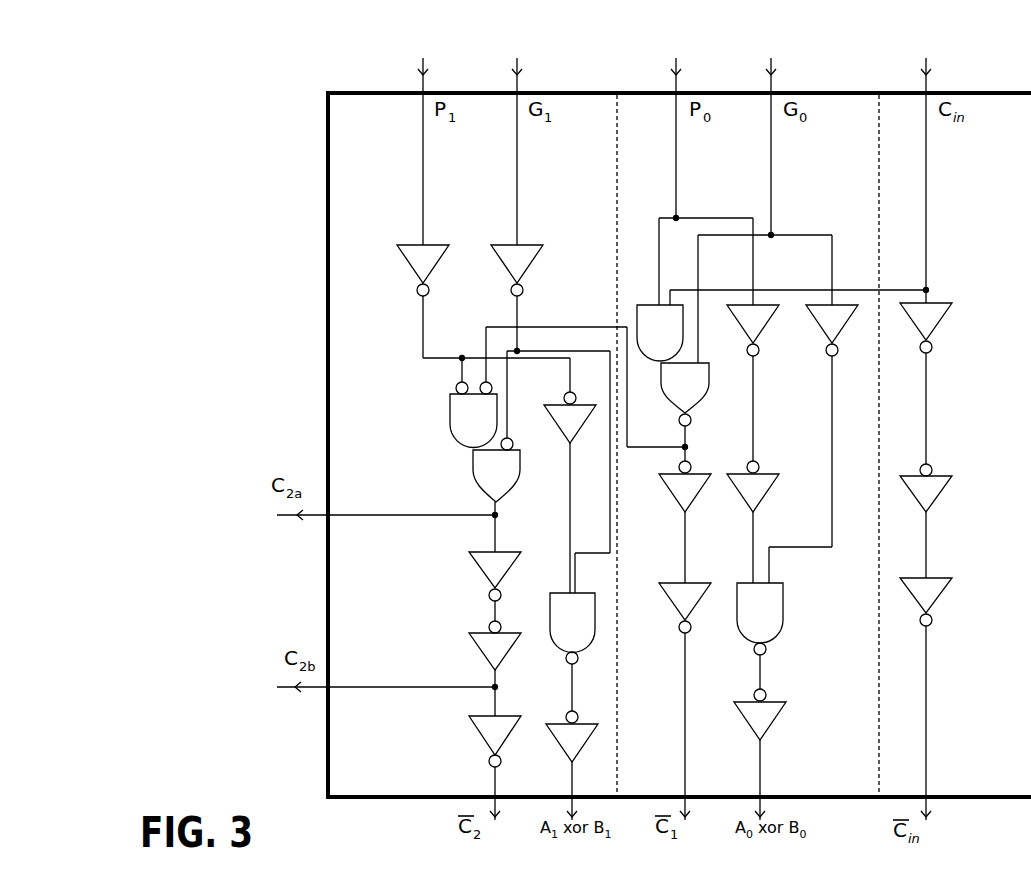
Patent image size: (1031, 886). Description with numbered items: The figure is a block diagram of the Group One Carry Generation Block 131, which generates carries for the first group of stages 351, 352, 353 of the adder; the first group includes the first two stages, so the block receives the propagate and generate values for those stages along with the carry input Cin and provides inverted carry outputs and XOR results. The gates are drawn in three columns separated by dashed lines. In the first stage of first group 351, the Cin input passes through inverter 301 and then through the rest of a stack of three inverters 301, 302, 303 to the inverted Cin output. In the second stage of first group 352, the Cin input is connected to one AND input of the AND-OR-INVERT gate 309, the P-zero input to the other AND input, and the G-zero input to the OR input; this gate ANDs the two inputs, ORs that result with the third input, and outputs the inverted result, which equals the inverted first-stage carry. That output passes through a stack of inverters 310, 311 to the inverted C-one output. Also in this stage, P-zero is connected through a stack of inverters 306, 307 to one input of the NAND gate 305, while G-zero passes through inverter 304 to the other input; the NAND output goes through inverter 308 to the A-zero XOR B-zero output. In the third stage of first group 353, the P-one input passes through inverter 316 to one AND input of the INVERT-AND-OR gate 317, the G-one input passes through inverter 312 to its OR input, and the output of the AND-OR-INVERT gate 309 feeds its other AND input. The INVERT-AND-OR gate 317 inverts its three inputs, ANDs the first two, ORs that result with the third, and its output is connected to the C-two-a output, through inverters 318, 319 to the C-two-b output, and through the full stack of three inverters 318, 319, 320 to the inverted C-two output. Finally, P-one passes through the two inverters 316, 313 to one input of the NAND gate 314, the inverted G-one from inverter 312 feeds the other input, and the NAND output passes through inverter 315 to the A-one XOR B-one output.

The Group 1 Carry Generation Block 131 is at (602, 401).
The first stage of first group 351 is at (953, 158).
The second stage of first group 352 is at (781, 404).
The third stage of first group 353 is at (516, 404).
The inverter 301 is at (926, 328).
The inverter 302 is at (926, 488).
The inverter 303 is at (936, 602).
The inverter 304 is at (832, 330).
The NAND gate 305 is at (760, 619).
The inverter 306 is at (753, 330).
The inverter 307 is at (753, 486).
The inverter 308 is at (769, 716).
The AND-OR-INVERT gate 309 is at (673, 365).
The inverter 310 is at (677, 489).
The inverter 311 is at (676, 608).
The inverter 312 is at (532, 270).
The inverter 313 is at (570, 417).
The NAND gate 314 is at (572, 628).
The inverter 315 is at (572, 736).
The inverter 316 is at (423, 270).
The INVERT-AND-OR gate 317 is at (474, 442).
The inverter 318 is at (495, 576).
The inverter 319 is at (486, 645).
The inverter 320 is at (483, 741).